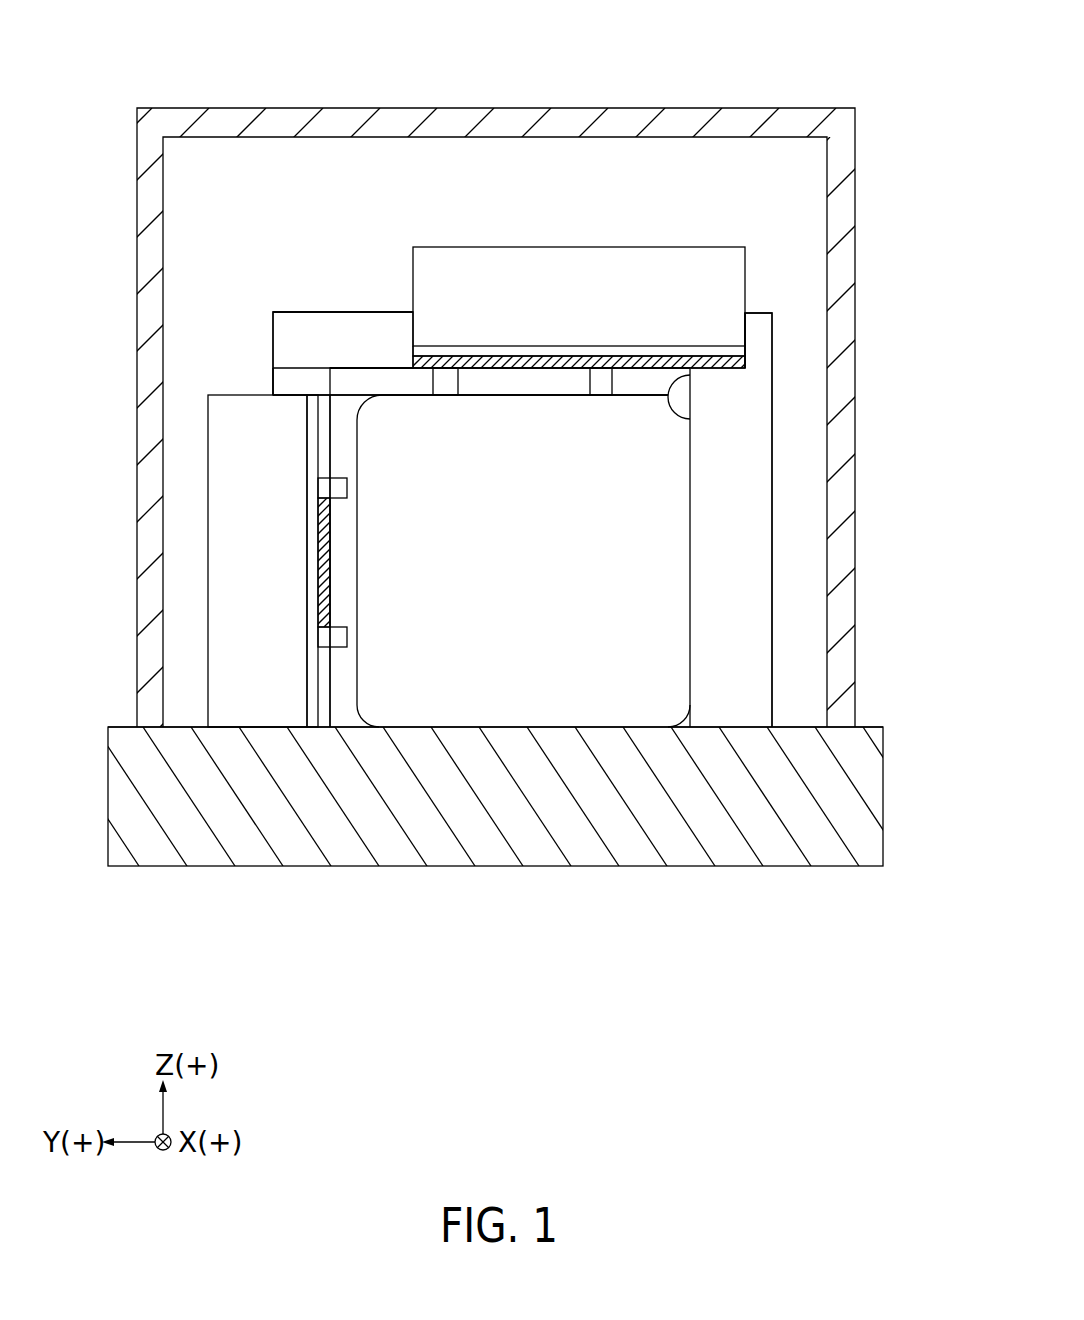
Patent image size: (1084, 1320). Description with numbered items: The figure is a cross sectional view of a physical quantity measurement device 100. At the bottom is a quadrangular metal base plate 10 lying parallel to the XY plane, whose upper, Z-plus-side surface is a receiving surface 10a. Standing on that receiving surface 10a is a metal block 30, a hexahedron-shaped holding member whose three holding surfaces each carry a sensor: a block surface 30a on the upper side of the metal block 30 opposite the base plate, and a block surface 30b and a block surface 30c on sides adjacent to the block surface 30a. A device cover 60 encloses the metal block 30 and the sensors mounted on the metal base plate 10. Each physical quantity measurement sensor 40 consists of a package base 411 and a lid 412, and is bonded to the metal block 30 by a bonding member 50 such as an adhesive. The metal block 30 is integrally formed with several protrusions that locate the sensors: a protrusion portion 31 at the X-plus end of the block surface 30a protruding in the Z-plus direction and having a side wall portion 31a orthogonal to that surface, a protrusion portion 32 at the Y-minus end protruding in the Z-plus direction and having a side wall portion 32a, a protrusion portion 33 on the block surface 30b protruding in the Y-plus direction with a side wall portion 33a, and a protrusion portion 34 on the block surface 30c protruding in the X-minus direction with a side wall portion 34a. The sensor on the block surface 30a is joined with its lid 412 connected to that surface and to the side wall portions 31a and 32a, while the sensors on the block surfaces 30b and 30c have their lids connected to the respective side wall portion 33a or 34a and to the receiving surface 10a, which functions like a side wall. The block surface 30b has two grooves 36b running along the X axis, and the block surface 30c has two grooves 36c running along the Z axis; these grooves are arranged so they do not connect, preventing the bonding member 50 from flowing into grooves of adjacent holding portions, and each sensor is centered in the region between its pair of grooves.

The physical quantity measurement device 100 is at (850, 56).
The metal base plate 10 is at (860, 803).
The receiving surface 10a is at (872, 727).
The metal block 30 is at (782, 491).
The block surface 30a is at (383, 366).
The block surface 30b is at (330, 547).
The block surface 30c is at (518, 385).
The protrusion portion 31 is at (306, 302).
The side wall portion 31a is at (342, 337).
The protrusion portion 32 is at (760, 303).
The side wall portion 32a is at (745, 332).
The protrusion portion 33 is at (264, 384).
The side wall portion 33a is at (297, 380).
The protrusion portion 34 is at (712, 555).
The side wall portion 34a is at (667, 387).
The grooves 36b is at (332, 486).
The grooves 36c is at (446, 382).
The physical quantity measurement sensor 40 is at (584, 620).
The package base 411 is at (730, 263).
The lid 412 is at (730, 353).
The bonding member 50 is at (541, 362).
The device cover 60 is at (852, 593).